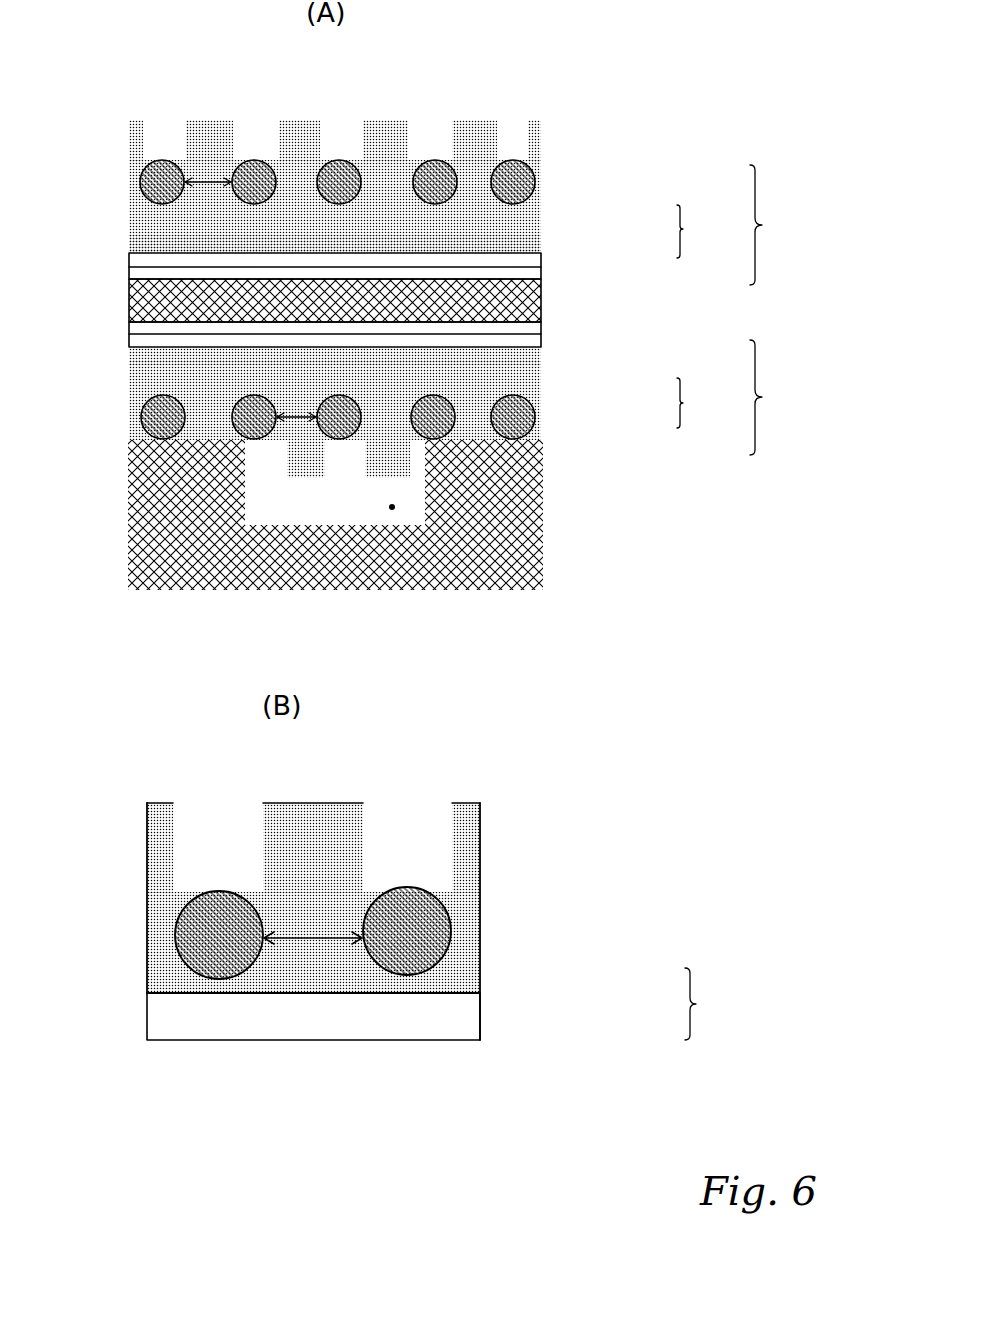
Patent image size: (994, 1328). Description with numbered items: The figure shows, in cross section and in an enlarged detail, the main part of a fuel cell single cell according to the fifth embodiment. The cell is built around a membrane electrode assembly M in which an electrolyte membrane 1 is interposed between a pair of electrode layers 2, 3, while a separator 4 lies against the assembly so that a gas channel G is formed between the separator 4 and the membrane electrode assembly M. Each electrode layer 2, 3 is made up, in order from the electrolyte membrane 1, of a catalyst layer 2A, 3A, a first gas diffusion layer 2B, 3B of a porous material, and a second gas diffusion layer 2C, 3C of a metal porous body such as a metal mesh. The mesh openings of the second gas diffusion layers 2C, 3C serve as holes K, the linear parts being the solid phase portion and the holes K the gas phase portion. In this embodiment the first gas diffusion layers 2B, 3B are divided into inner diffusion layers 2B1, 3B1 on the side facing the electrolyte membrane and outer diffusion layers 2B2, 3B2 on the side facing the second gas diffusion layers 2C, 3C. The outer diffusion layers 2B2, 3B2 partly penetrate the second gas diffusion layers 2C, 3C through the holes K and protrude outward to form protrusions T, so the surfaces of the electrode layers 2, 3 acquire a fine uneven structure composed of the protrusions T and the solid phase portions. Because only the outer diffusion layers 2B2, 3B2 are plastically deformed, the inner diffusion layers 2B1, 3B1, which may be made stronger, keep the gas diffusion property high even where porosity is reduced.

The membrane electrode assembly M is at (565, 68).
The electrolyte membrane 1 is at (130, 304).
The electrode layer 2 is at (461, 600).
The catalyst layer 2A is at (541, 273).
The first gas diffusion layer 2B is at (461, 600).
The inner diffusion layer 2B1 is at (541, 213).
The outer diffusion layer 2B2 is at (541, 250).
The second gas diffusion layer 2C is at (541, 172).
The electrode layer 3 is at (458, 391).
The catalyst layer 3A is at (541, 327).
The first gas diffusion layer 3B is at (430, 391).
The inner diffusion layer 3B1 is at (541, 343).
The outer diffusion layer 3B2 is at (541, 383).
The second gas diffusion layer 3C is at (541, 422).
The separator 4 is at (128, 518).
The protrusion T is at (183, 112).
The hole K is at (208, 176).
The gas channel G is at (392, 507).